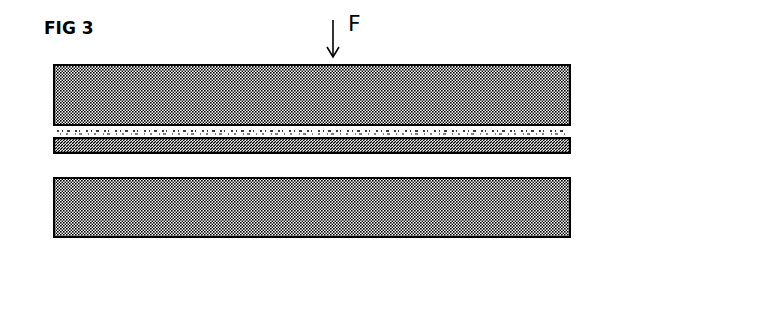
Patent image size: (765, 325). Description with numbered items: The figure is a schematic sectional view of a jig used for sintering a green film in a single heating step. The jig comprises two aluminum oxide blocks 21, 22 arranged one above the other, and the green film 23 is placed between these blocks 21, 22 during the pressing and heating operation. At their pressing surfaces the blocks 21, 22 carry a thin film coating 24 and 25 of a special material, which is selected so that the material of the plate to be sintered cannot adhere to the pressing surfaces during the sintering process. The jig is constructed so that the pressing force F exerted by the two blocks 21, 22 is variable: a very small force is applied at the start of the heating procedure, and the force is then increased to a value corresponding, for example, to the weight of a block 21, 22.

The block 21 is at (500, 82).
The block 22 is at (513, 219).
The green film 23 is at (195, 138).
The thin film coating 24 is at (562, 182).
The thin film coating 25 is at (570, 125).